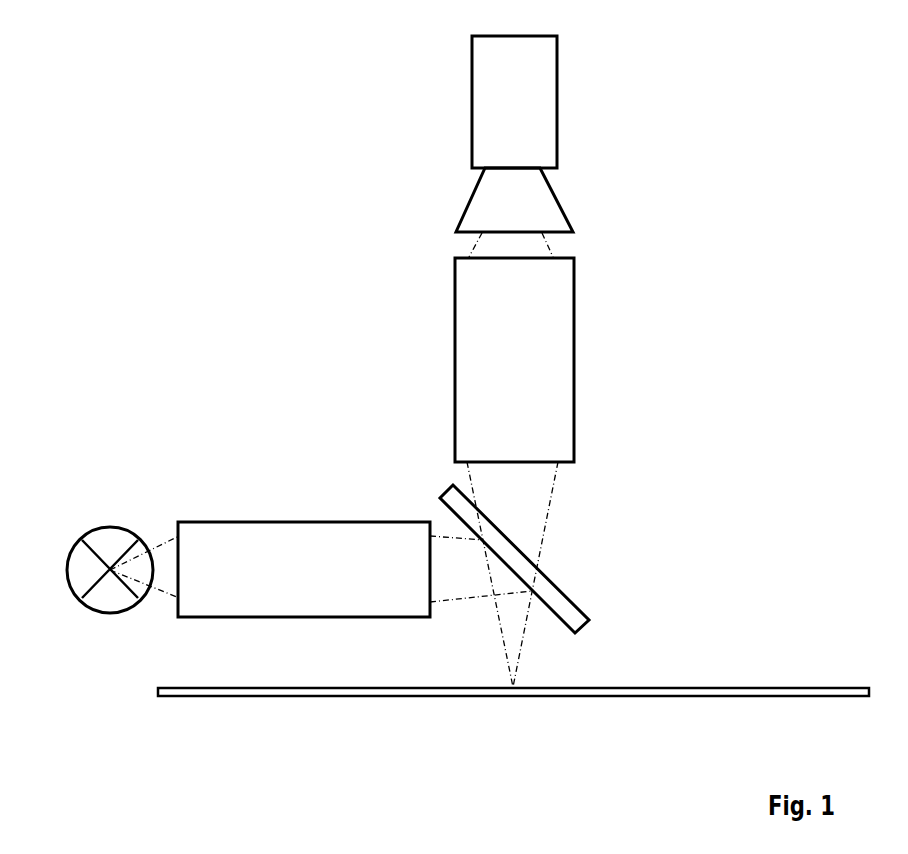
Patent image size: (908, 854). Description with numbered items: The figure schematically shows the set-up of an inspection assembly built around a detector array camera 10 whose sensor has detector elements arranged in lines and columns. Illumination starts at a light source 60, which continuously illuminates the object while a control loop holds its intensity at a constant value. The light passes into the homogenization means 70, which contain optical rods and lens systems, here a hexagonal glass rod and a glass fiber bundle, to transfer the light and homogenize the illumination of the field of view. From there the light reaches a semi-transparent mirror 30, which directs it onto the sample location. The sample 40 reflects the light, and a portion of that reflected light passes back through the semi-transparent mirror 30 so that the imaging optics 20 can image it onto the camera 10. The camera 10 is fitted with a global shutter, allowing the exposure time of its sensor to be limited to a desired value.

The camera 10 is at (542, 36).
The imaging optics 20 is at (574, 297).
The semi-transparent mirror 30 is at (578, 603).
The sample 40 is at (785, 688).
The light source 60 is at (112, 527).
The homogenization means 70 is at (197, 522).